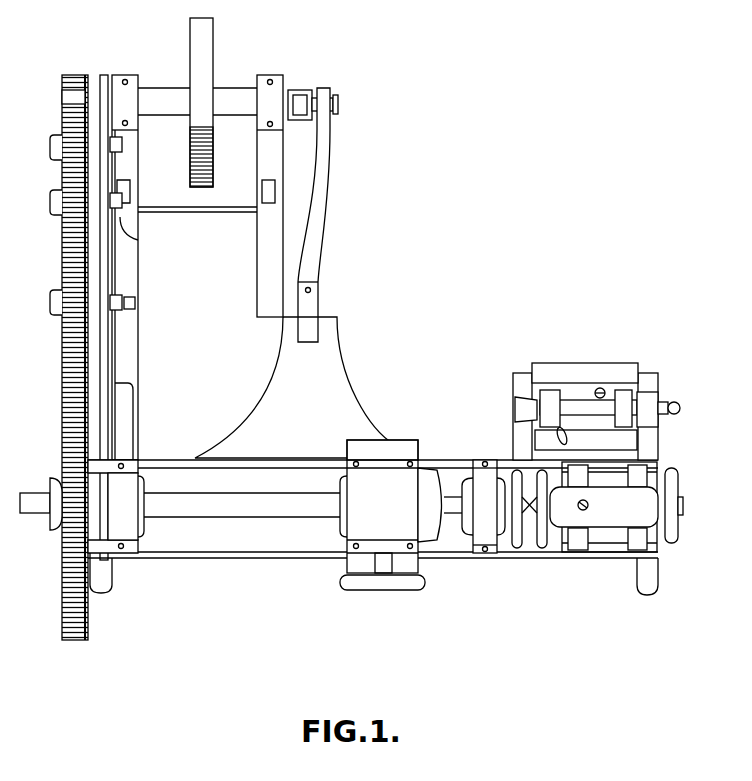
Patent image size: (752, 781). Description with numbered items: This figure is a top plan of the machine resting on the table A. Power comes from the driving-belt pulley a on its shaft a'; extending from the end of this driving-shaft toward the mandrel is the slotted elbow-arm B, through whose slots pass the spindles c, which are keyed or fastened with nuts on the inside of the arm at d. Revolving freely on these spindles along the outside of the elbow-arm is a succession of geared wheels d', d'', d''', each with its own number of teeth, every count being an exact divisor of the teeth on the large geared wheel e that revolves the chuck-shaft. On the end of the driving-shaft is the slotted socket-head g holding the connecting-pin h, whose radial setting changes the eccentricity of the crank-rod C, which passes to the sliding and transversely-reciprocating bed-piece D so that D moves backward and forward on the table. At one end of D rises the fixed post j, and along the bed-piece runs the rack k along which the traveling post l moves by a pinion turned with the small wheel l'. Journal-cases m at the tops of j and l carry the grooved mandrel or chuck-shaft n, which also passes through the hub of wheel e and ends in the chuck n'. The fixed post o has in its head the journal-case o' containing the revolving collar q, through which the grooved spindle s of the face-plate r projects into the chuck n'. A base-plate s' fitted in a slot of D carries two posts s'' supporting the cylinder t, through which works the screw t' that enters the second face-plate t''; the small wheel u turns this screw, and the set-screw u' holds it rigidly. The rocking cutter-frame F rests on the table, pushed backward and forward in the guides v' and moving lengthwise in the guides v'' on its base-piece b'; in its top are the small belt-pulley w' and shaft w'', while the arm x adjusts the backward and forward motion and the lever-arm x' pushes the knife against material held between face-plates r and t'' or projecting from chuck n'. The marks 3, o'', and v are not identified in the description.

The large geared wheel e is at (54, 357).
The geared wheel d' is at (73, 100).
The geared wheel d'' is at (67, 175).
The geared wheel d''' is at (68, 302).
The spindles c is at (98, 317).
The elbow-arm B is at (125, 267).
The keying or fastening nuts d is at (136, 224).
The shaft a' is at (197, 101).
The driving-belt pulley a is at (201, 102).
The table A is at (270, 196).
The slotted socket-head g is at (300, 105).
The connecting-pin h is at (338, 104).
The crank-rod C is at (314, 215).
The sliding and transversely-reciprocating bed-piece D is at (295, 387).
The journal-cases m is at (253, 506).
The mandrel or chuck-shaft n is at (242, 505).
The fixed post j is at (114, 562).
The traveling post l is at (382, 450).
The rack k is at (383, 563).
The small wheel l' is at (382, 583).
The chuck n' is at (430, 505).
The channeled or grooved spindle s is at (453, 504).
The journal-case o' is at (483, 506).
The revolving collar q is at (470, 465).
The fixed post o is at (491, 446).
The pin 3 is at (530, 432).
The base-piece b' is at (498, 388).
The face-plate or disk r is at (537, 575).
The face-plate t'' is at (546, 541).
The bearing bolt o'' is at (508, 576).
The set-screw u' is at (599, 574).
The rail v is at (508, 562).
The rocking cutter-frame F is at (585, 407).
The guides v'' is at (585, 406).
The guides v' is at (583, 387).
The arm x is at (626, 358).
The shaft w'' is at (576, 408).
The small belt-pulley w' is at (636, 408).
The lever-arm x' is at (679, 398).
The posts s'' is at (609, 507).
The base-plate s' is at (601, 542).
The cylinder t is at (604, 507).
The small wheel u is at (678, 505).
The screw t' is at (676, 454).